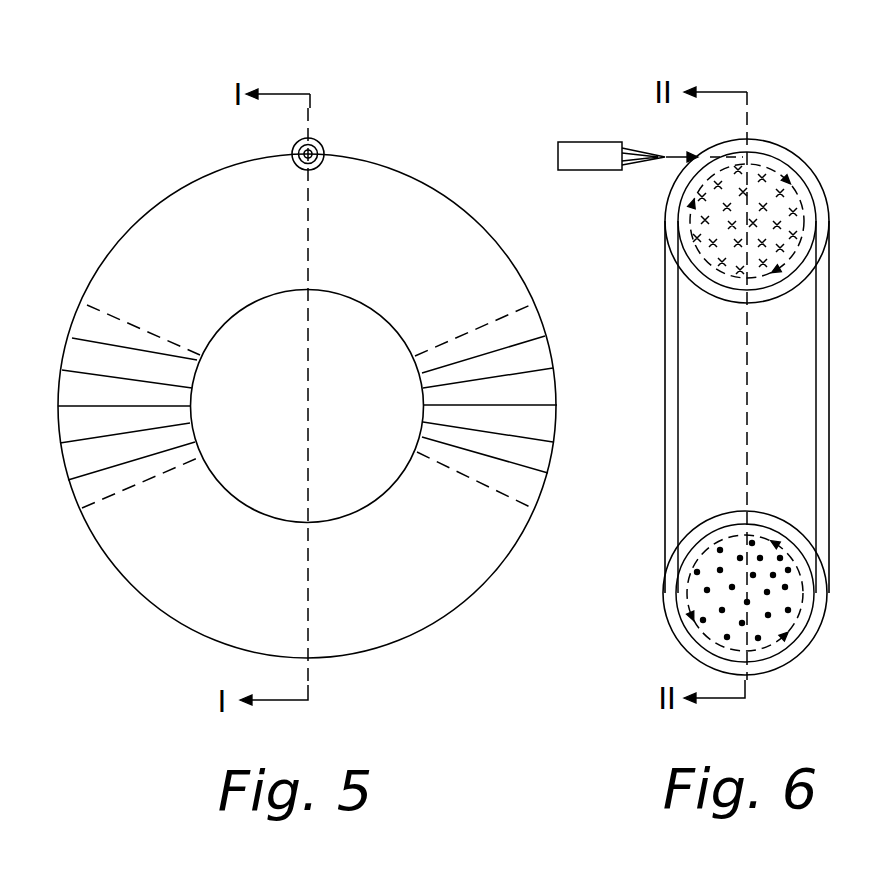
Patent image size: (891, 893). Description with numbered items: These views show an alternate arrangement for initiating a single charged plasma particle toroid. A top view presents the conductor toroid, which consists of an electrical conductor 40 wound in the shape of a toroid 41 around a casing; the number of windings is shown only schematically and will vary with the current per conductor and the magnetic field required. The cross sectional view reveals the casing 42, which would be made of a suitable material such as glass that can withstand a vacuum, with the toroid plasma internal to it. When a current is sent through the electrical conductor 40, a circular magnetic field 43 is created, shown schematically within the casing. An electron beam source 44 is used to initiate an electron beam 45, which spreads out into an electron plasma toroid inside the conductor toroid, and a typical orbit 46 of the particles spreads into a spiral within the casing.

In FIG. 5, the electrical conductor 40 is at (540, 339).
In FIG. 6, the electrical conductor 40 is at (792, 148).
In FIG. 5, the toroid 41 is at (397, 167).
In FIG. 6, the casing 42 is at (678, 375).
In FIG. 6, the circular magnetic field 43 is at (802, 207).
In FIG. 5, the electron beam source 44 is at (322, 142).
In FIG. 6, the electron beam source 44 is at (605, 170).
In FIG. 6, the electron beam 45 is at (730, 158).
In FIG. 6, the typical orbit 46 is at (800, 243).